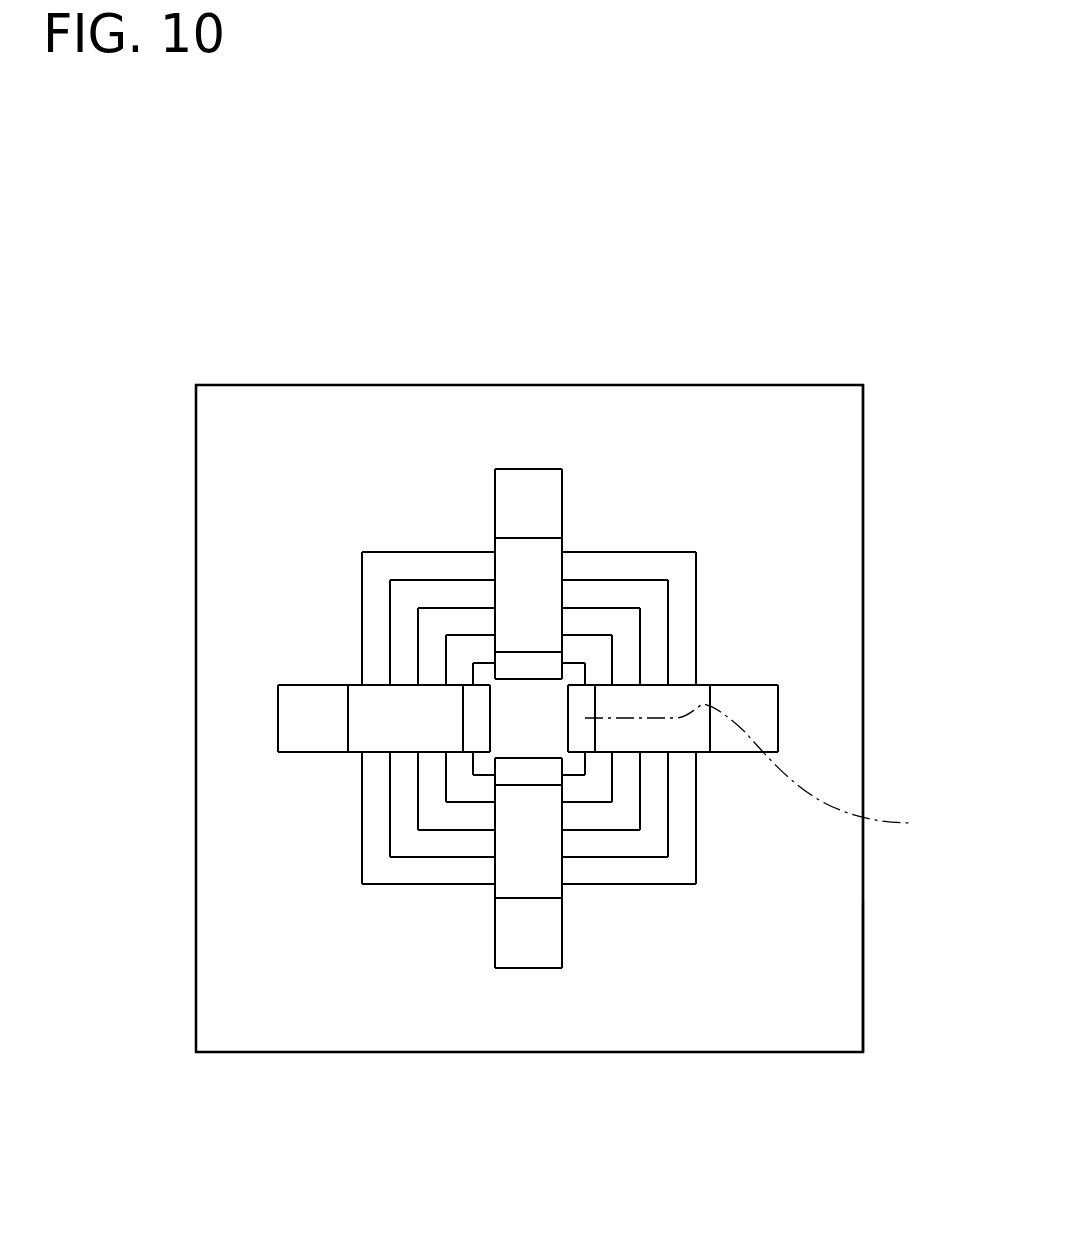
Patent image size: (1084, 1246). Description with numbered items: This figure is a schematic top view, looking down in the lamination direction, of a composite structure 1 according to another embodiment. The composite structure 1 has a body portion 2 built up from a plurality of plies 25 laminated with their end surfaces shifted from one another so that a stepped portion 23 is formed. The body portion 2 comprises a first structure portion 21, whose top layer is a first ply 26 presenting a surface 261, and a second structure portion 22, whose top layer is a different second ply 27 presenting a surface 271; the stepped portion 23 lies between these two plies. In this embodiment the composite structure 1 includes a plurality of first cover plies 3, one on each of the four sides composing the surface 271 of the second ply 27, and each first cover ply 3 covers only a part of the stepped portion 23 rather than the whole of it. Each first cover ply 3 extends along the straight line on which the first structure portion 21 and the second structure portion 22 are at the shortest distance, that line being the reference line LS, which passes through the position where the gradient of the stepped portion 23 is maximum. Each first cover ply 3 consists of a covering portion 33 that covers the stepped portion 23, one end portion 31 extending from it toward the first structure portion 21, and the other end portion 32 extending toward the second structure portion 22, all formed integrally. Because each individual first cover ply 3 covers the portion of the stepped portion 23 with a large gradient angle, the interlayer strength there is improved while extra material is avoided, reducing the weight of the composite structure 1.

The composite structure 1 is at (310, 242).
The body portion 2 is at (268, 385).
The first cover ply 3 is at (532, 468).
The first structure portion 21 is at (728, 450).
The second structure portion 22 is at (511, 703).
The stepped portion 23 is at (623, 585).
The plies 25 is at (696, 613).
The first ply 26 is at (863, 913).
The surface of the first ply 261 is at (845, 988).
The second ply 27 is at (547, 703).
The surface of the second ply 271 is at (570, 662).
The one end portion 31 is at (737, 737).
The other end portion 32 is at (577, 735).
The covering portion 33 is at (668, 740).
The reference line LS is at (768, 772).